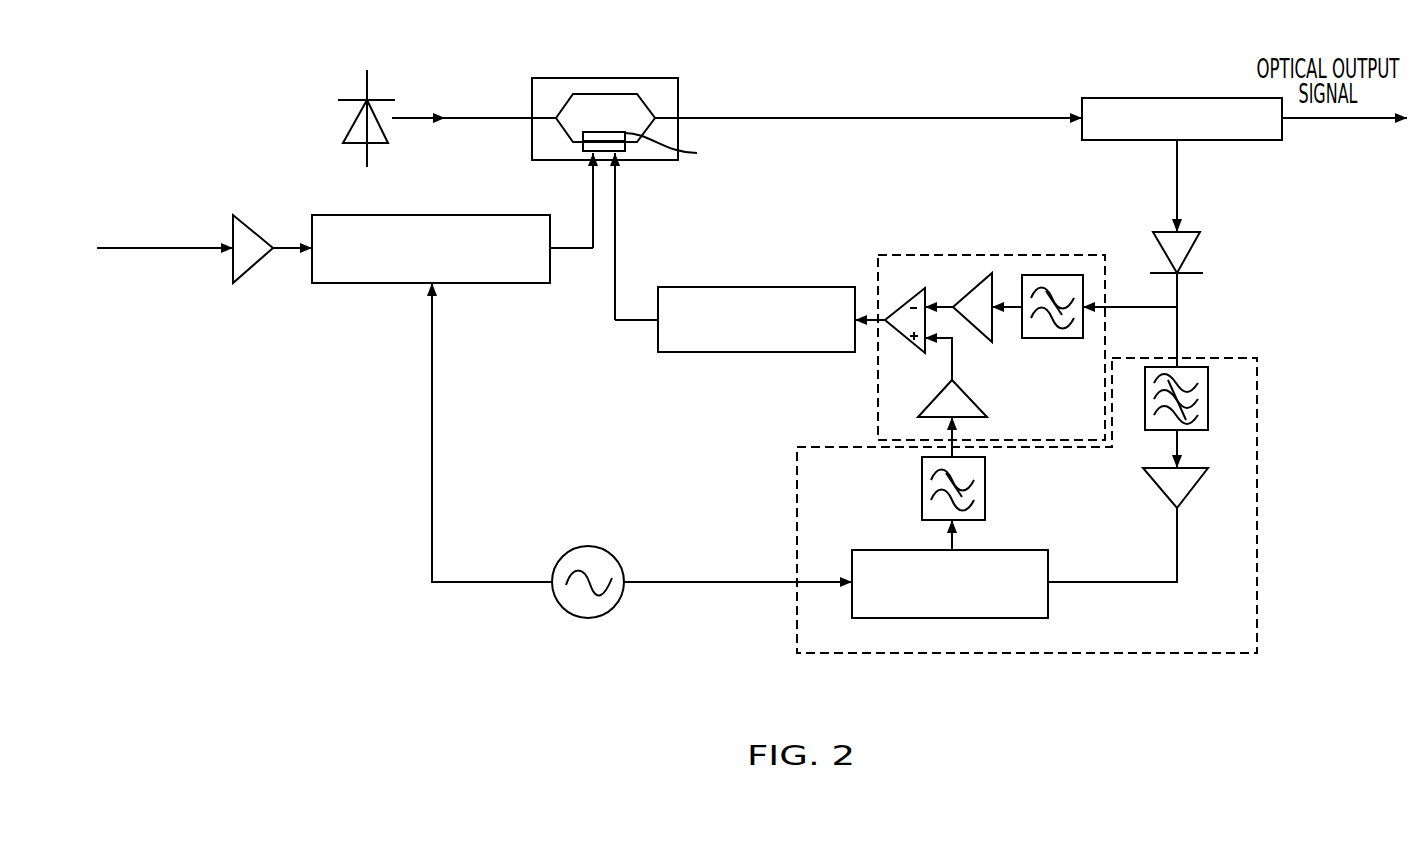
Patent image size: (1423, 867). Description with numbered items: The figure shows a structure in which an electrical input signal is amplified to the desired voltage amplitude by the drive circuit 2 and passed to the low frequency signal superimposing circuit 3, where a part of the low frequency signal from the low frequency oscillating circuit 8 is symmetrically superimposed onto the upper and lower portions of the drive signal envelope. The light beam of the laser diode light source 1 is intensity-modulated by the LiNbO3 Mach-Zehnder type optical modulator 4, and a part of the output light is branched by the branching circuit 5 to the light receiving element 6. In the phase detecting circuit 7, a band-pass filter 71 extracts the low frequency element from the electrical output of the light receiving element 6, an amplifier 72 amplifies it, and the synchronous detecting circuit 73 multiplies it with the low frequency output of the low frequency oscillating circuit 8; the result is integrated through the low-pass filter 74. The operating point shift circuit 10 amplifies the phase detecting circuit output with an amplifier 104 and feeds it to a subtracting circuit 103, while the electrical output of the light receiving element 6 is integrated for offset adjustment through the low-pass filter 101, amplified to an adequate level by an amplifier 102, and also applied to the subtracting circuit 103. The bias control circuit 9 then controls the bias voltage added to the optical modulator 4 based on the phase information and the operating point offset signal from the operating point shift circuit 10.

The light source 1 is at (374, 98).
The drive circuit 2 is at (257, 233).
The low frequency signal superimposing circuit 3 is at (488, 215).
The optical modulator 4 is at (597, 78).
The branching circuit 5 is at (1138, 98).
The light receiving element 6 is at (1186, 228).
The phase detecting circuit 7 is at (997, 656).
The low frequency oscillating circuit 8 is at (585, 547).
The bias control circuit 9 is at (802, 287).
The operating point shift circuit 10 is at (978, 252).
The band-pass filter 71 is at (1208, 390).
The amplifier 72 is at (1153, 480).
The synchronous detecting circuit 73 is at (1008, 550).
The low-pass filter 74 is at (922, 500).
The low-pass filter 101 is at (1020, 297).
The amplifier 102 is at (958, 299).
The subtracting circuit 103 is at (908, 300).
The amplifier 104 is at (978, 405).